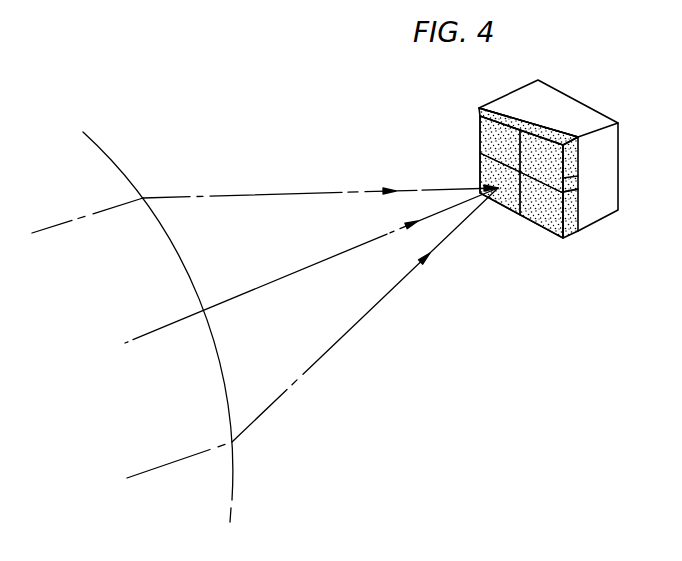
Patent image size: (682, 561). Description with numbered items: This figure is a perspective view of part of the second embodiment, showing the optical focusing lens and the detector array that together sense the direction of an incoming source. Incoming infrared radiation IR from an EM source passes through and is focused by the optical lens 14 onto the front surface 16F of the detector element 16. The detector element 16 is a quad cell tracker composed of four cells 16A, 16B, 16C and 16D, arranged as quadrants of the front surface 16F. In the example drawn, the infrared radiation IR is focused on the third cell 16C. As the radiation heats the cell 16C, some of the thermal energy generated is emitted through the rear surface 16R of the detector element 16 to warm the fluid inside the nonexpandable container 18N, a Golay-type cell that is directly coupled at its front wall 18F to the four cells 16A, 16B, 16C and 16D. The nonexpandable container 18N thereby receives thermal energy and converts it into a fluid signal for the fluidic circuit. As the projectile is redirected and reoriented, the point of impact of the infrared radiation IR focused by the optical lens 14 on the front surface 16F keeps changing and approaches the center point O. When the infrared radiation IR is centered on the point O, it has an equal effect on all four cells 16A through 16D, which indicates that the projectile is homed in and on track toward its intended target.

The optical lens 14 is at (115, 163).
The infrared radiation IR is at (253, 191).
The detector element 16 is at (541, 163).
The first cell 16A is at (479, 130).
The second cell 16B is at (578, 180).
The third cell 16C is at (479, 172).
The fourth cell 16D is at (577, 214).
The front surface 16F is at (501, 207).
The rear surface 16R is at (513, 112).
The nonexpandable container 18N is at (523, 87).
The front wall 18F is at (558, 133).
The center point O is at (521, 173).